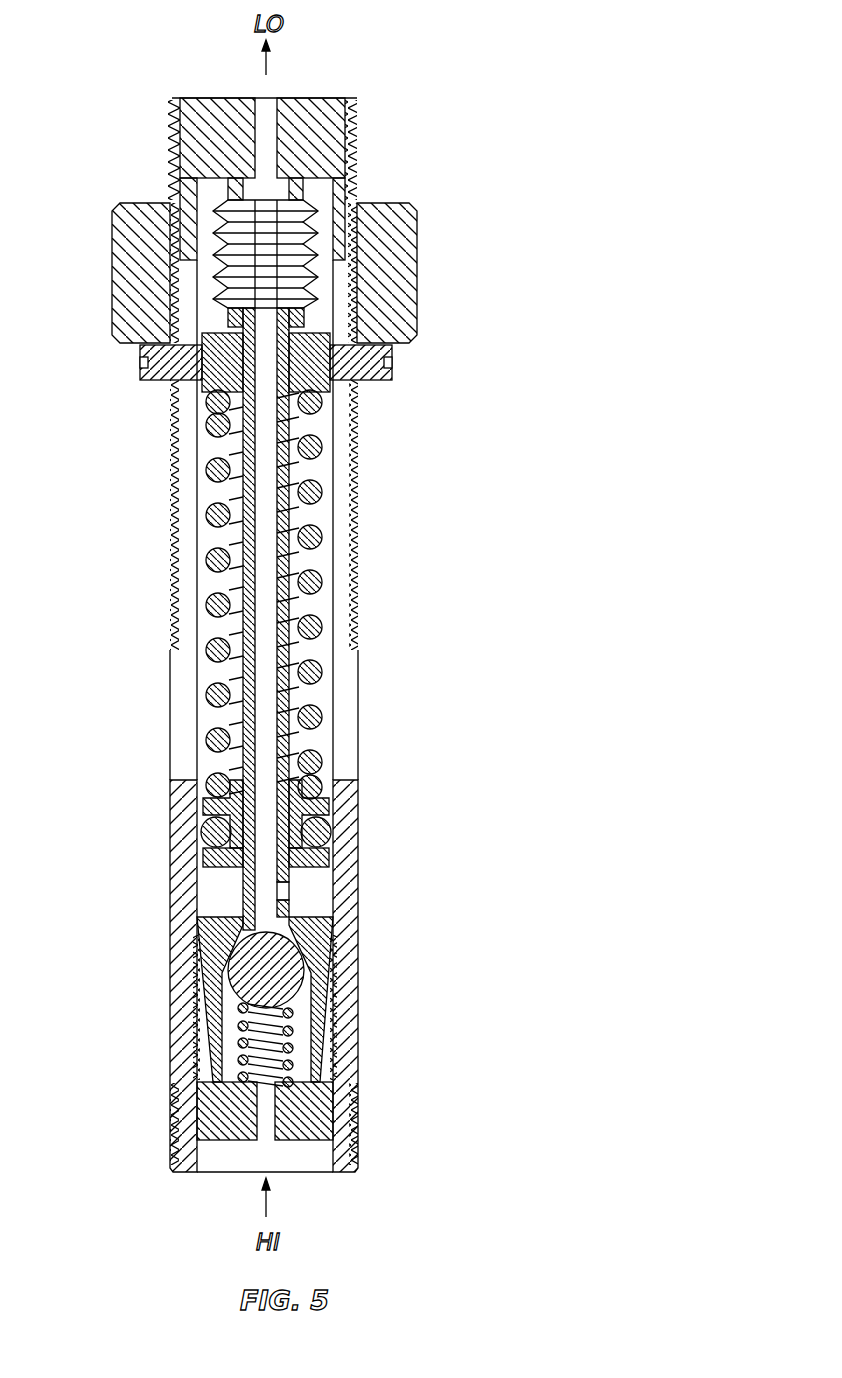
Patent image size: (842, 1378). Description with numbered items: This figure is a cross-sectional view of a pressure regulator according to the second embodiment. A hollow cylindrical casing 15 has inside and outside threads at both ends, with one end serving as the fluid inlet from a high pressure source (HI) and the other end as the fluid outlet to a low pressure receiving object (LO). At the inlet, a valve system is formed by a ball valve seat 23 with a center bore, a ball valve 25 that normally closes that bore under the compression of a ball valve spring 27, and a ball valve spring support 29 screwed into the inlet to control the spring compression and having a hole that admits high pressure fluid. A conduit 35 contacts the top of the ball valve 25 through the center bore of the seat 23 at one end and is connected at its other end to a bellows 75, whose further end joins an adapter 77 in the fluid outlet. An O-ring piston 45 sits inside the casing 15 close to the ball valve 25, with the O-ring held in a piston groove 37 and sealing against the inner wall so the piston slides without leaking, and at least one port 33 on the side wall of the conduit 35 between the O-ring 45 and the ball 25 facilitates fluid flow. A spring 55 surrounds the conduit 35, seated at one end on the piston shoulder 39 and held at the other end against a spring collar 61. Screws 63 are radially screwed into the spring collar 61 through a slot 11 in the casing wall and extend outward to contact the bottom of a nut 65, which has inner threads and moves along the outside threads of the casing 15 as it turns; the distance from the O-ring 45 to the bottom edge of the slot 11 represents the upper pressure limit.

The slot 11 is at (345, 593).
The hollow cylindrical casing 15 is at (188, 807).
The ball valve seat 23 is at (207, 933).
The ball valve 25 is at (240, 980).
The ball valve spring 27 is at (237, 1043).
The ball valve spring support 29 is at (213, 1120).
The port 33 is at (283, 893).
The conduit 35 is at (284, 748).
The piston groove 37 is at (327, 847).
The piston shoulder 39 is at (324, 800).
The O-ring piston 45 is at (320, 830).
The spring 55 is at (312, 672).
The spring collar 61 is at (318, 390).
The screws 63 is at (388, 365).
The nut 65 is at (157, 214).
The bellows 75 is at (313, 207).
The adapter 77 is at (322, 130).